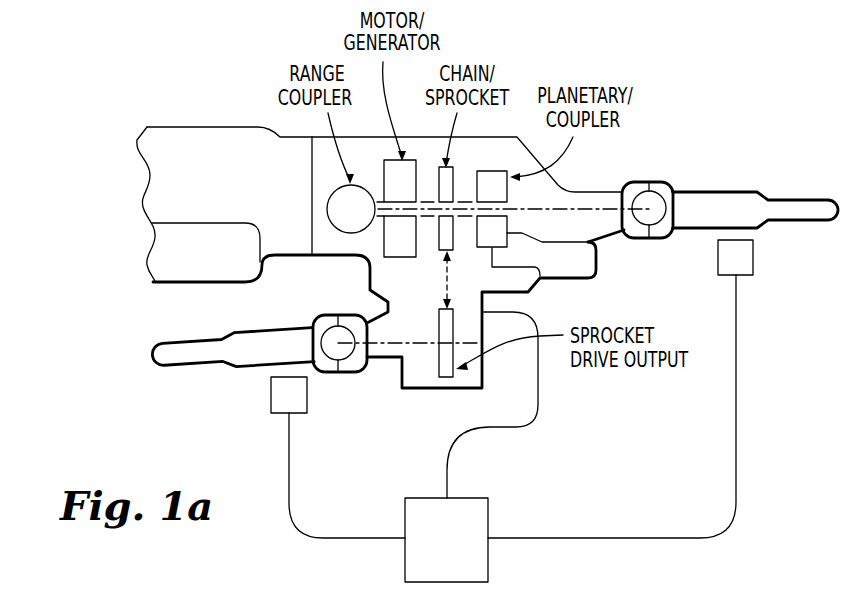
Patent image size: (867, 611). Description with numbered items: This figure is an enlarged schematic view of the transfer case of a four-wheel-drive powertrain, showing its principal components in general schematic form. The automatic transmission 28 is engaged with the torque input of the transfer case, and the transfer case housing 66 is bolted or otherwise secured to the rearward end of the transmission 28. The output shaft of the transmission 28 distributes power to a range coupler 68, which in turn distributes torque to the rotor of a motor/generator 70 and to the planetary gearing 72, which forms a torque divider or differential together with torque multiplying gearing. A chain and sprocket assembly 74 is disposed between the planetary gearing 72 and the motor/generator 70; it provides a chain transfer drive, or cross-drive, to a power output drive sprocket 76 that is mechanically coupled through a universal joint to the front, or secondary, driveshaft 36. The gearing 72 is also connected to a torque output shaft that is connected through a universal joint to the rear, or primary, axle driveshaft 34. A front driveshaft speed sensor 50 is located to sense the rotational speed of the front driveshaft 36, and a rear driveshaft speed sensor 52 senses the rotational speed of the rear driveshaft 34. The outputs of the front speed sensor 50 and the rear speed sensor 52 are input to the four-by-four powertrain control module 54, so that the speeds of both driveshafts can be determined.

The automatic transmission 28 is at (205, 138).
The rear axle driveshaft 34 is at (722, 208).
The front axle driveshaft 36 is at (247, 350).
The front driveshaft speed sensor 50 is at (307, 393).
The rear driveshaft speed sensor 52 is at (753, 257).
The 4×4 powertrain control module 54 is at (490, 517).
The housing 66 is at (600, 243).
The range coupler 68 is at (343, 210).
The motor/generator 70 is at (393, 258).
The planetary gearing 72 is at (487, 237).
The chain and sprocket assembly 74 is at (443, 247).
The power output drive sprocket 76 is at (445, 378).